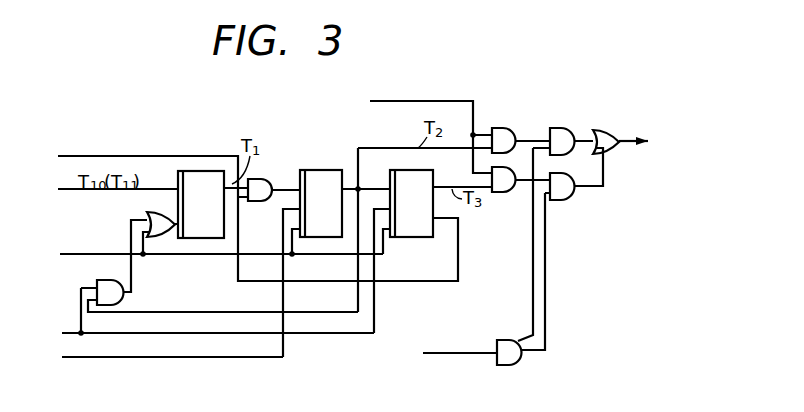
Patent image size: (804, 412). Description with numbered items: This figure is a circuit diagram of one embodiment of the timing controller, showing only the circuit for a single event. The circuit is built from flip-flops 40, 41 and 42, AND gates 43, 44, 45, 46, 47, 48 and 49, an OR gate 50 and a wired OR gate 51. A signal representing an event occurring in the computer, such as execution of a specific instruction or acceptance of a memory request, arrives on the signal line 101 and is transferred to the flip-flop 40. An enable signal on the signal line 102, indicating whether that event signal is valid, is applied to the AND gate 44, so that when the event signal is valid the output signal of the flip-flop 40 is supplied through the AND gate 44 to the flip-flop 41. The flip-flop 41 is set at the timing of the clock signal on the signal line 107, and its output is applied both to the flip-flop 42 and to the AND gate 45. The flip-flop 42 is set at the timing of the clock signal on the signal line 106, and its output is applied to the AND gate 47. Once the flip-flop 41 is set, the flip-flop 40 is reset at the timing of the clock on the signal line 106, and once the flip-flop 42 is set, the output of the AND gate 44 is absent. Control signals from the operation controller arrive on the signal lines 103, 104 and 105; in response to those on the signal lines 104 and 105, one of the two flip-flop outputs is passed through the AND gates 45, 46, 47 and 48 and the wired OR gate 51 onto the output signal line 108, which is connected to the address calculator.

The flip-flop 40 is at (204, 176).
The flip-flop 41 is at (320, 170).
The flip-flop 42 is at (410, 172).
The AND gate 43 is at (136, 293).
The AND gate 44 is at (272, 181).
The AND gate 45 is at (501, 131).
The AND gate 46 is at (560, 130).
The AND gate 47 is at (503, 182).
The AND gate 48 is at (568, 199).
The AND gate 49 is at (501, 341).
The OR gate 50 is at (150, 212).
The wired OR gate 51 is at (608, 132).
The signal line 101 is at (103, 191).
The signal line 102 is at (110, 155).
The signal line 103 is at (100, 253).
The signal line 104 is at (426, 100).
The signal line 105 is at (466, 354).
The signal line 106 is at (72, 333).
The signal line 107 is at (86, 358).
The signal line 108 is at (630, 140).